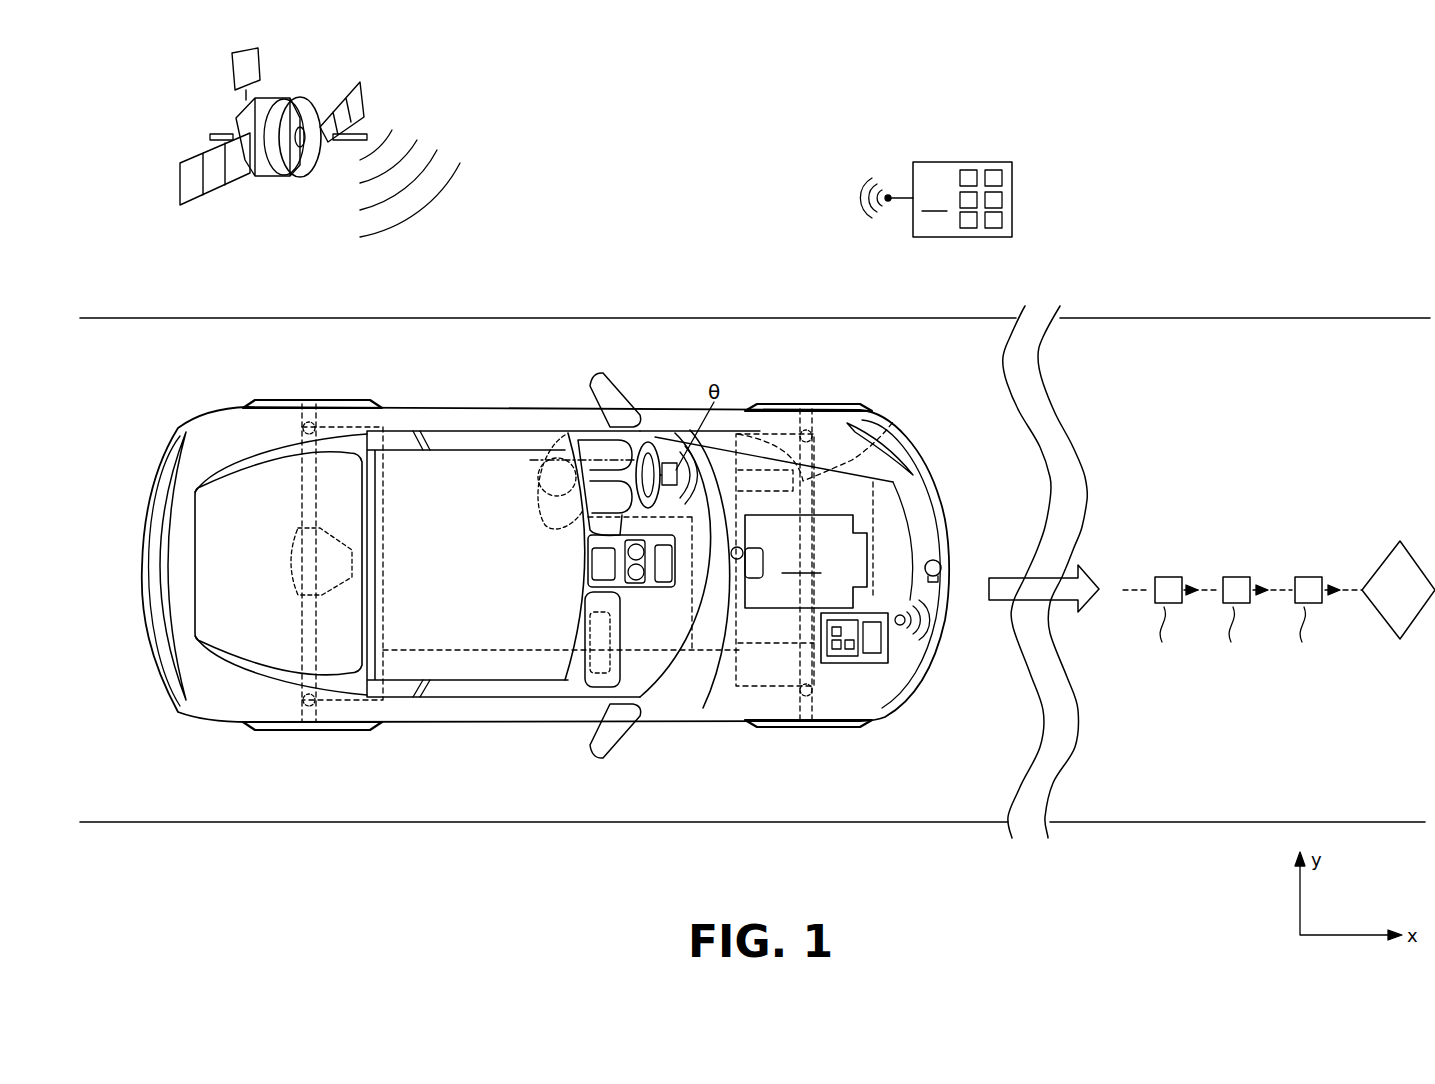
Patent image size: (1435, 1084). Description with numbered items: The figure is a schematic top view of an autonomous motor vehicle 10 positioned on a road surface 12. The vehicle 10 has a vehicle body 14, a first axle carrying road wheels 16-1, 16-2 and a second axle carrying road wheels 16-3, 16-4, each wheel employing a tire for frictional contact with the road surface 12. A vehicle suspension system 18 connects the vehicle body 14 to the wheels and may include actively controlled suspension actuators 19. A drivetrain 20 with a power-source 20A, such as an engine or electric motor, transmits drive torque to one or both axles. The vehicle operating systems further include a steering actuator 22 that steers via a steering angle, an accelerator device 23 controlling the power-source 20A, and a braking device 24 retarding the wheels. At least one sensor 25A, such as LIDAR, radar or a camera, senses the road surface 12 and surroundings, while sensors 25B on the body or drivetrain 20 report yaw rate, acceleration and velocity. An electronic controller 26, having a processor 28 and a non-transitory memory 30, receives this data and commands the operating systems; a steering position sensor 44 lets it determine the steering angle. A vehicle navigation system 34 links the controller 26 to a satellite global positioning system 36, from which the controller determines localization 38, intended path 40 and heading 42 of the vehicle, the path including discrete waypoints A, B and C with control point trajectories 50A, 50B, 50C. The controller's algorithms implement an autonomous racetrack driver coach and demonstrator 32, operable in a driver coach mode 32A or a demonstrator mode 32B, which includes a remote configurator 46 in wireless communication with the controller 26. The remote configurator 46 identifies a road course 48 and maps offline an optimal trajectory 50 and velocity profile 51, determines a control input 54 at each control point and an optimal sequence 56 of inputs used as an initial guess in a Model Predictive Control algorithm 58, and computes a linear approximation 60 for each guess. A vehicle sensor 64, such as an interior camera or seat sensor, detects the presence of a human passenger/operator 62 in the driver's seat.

The motor vehicle 10 is at (566, 384).
The road surface 12 is at (118, 360).
The vehicle body 14 is at (680, 406).
The road wheel 16-1 is at (848, 408).
The road wheel 16-2 is at (775, 729).
The road wheel 16-3 is at (300, 404).
The road wheel 16-4 is at (310, 729).
The vehicle suspension system 18 is at (275, 561).
The suspension actuators 19 is at (315, 429).
The drivetrain 20 is at (868, 602).
The power-source 20A is at (806, 561).
The steering actuator 22 is at (880, 429).
The accelerator device 23 is at (740, 497).
The braking device 24 is at (663, 441).
The sensor 25A is at (941, 572).
The sensors 25B is at (740, 560).
The electronic controller 26 is at (835, 631).
The processor 28 is at (836, 640).
The memory 30 is at (885, 641).
The autonomous racetrack driver coach and demonstrator 32 is at (680, 186).
The driver coach mode 32A is at (838, 655).
The demonstrator mode 32B is at (828, 661).
The vehicle navigation system 34 is at (642, 697).
The global positioning system 36 is at (372, 101).
The localization 38 is at (850, 651).
The intended path 40 is at (1262, 580).
The heading 42 is at (1047, 620).
The steering position sensor 44 is at (745, 431).
The remote configurator 46 is at (936, 199).
The road course 48 is at (1288, 298).
The optimal trajectory 50 is at (968, 170).
The control point trajectory 50A is at (1183, 580).
The control point trajectory 50B is at (1252, 580).
The control point trajectory 50C is at (1322, 580).
The velocity profile 51 is at (962, 195).
The control input 54 is at (968, 228).
The optimal sequence 56 is at (1002, 178).
The Model Predictive Control algorithm 58 is at (1002, 200).
The linear approximation 60 is at (1002, 220).
The human passenger/operator 62 is at (540, 441).
The vehicle sensor 64 is at (580, 451).